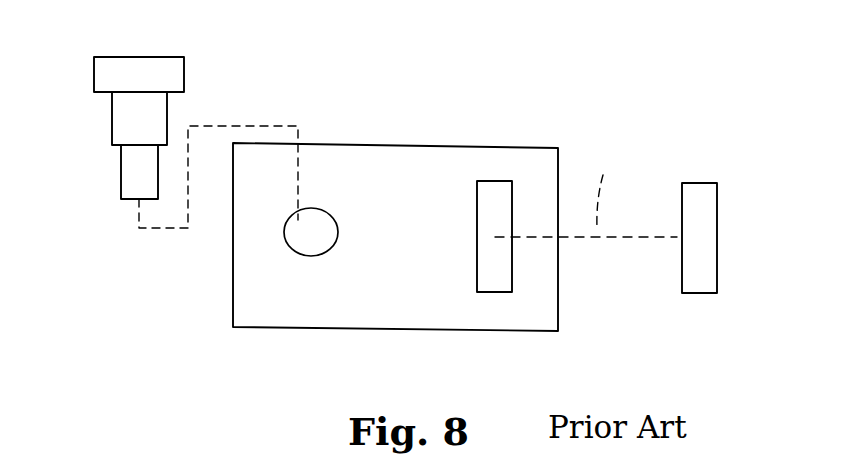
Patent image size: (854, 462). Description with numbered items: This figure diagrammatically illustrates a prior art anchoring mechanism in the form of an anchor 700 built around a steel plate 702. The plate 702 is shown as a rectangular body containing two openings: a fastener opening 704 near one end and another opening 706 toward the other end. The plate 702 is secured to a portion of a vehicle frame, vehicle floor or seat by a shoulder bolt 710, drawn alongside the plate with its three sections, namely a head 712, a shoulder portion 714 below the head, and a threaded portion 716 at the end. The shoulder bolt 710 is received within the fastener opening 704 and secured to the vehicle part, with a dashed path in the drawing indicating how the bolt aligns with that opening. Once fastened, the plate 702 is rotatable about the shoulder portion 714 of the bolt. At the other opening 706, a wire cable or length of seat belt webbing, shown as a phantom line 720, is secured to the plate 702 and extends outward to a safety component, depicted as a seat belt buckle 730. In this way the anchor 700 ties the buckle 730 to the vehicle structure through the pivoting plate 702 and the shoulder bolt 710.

The anchor 700 is at (395, 245).
The steel plate 702 is at (453, 318).
The fastener opening 704 is at (333, 216).
The opening 706 is at (487, 181).
The shoulder bolt 710 is at (172, 105).
The head 712 is at (175, 82).
The shoulder portion 714 is at (121, 111).
The threaded portion 716 is at (125, 173).
The phantom line 720 is at (614, 188).
The seat belt buckle 730 is at (710, 203).